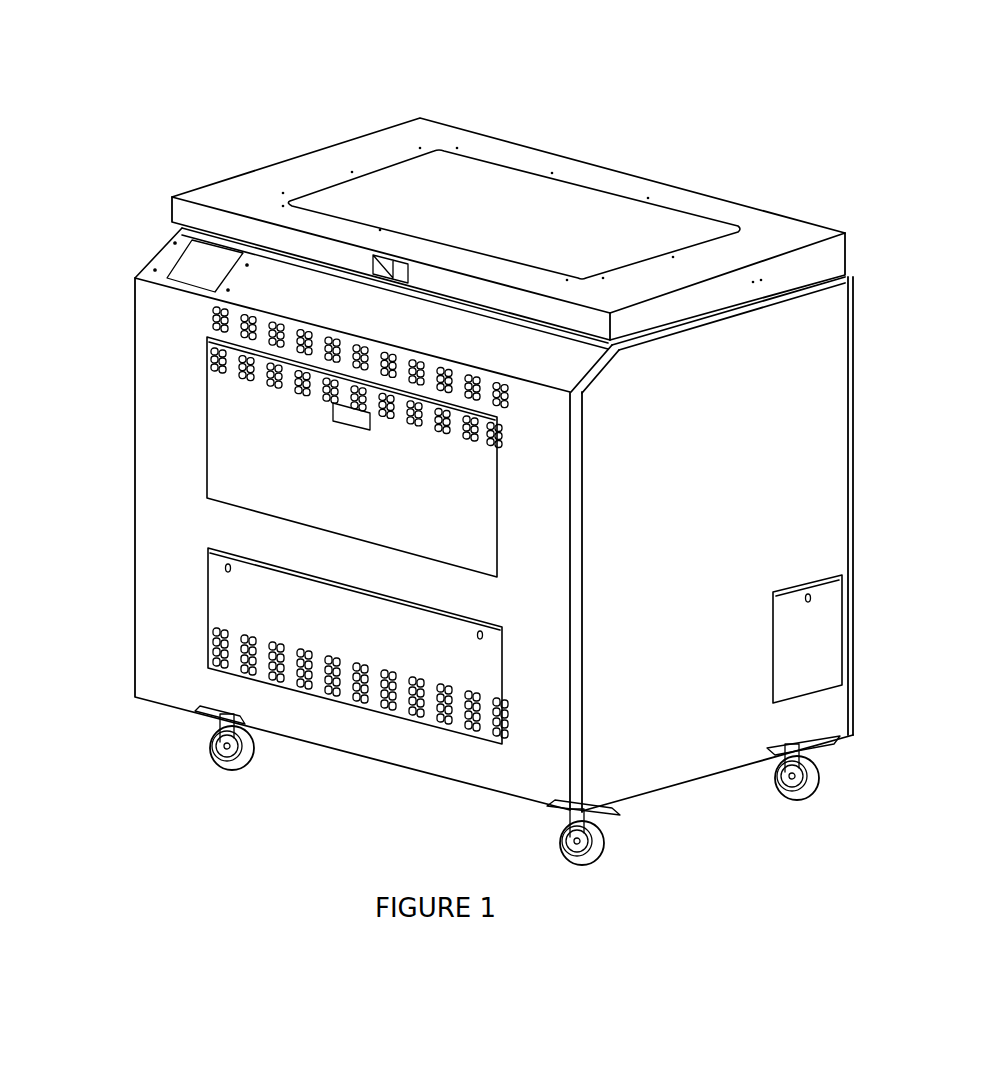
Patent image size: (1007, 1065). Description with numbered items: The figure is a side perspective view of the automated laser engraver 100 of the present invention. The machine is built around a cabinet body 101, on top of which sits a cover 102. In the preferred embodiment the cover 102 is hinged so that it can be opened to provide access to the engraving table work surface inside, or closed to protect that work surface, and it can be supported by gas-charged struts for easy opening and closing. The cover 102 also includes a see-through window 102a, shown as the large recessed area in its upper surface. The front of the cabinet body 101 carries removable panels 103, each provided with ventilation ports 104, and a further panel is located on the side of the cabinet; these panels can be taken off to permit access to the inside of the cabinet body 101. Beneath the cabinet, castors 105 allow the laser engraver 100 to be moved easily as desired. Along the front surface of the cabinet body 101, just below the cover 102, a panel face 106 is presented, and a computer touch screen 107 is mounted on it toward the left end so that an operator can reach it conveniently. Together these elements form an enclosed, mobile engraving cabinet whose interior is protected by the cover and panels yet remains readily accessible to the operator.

The automated laser engraver 100 is at (498, 457).
The cabinet body 101 is at (812, 512).
The cover 102 is at (523, 194).
The see-through window 102a is at (467, 173).
The removable panels 103 is at (233, 435).
The ventilation ports 104 is at (205, 362).
The castors 105 is at (222, 770).
The panel face 106 is at (557, 363).
The computer touch screen 107 is at (182, 270).